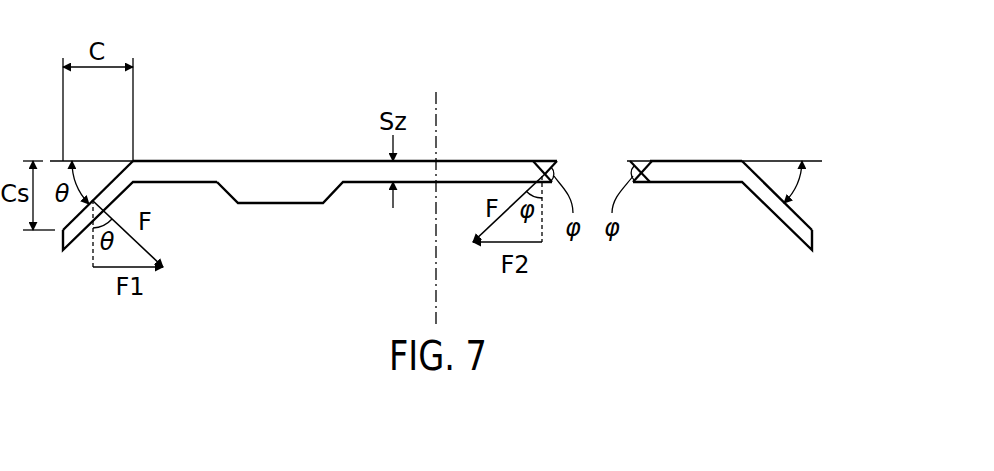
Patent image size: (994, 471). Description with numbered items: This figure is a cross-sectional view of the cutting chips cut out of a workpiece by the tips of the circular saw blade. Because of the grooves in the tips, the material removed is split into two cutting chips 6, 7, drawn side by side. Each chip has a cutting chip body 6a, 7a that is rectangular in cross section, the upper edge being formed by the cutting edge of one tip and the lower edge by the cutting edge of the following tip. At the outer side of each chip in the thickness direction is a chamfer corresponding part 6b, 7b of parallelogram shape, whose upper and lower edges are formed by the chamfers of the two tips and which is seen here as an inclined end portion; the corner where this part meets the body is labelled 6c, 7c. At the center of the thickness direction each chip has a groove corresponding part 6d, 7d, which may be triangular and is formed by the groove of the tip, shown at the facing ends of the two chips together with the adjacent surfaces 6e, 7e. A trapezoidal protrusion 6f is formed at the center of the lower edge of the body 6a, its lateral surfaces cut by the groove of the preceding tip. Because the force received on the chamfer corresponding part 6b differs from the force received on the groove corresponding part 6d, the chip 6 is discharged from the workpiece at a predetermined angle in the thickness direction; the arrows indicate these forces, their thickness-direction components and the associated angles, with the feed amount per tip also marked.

The cutting chip 6 is at (350, 120).
The cutting chip body 6a is at (183, 170).
The chamfer corresponding part 6b is at (103, 193).
The corner of first metal plate 6c is at (112, 175).
The groove corresponding part 6d is at (546, 170).
The sheared surface of first metal plate 6e is at (538, 165).
The protrusion 6f is at (275, 190).
The cutting chip 7 is at (722, 132).
The cutting chip body 7a is at (702, 170).
The chamfer corresponding part 7b is at (770, 197).
The corner of second metal plate 7c is at (760, 177).
The groove corresponding part 7d is at (638, 170).
The sheared surface of second metal plate 7e is at (643, 177).